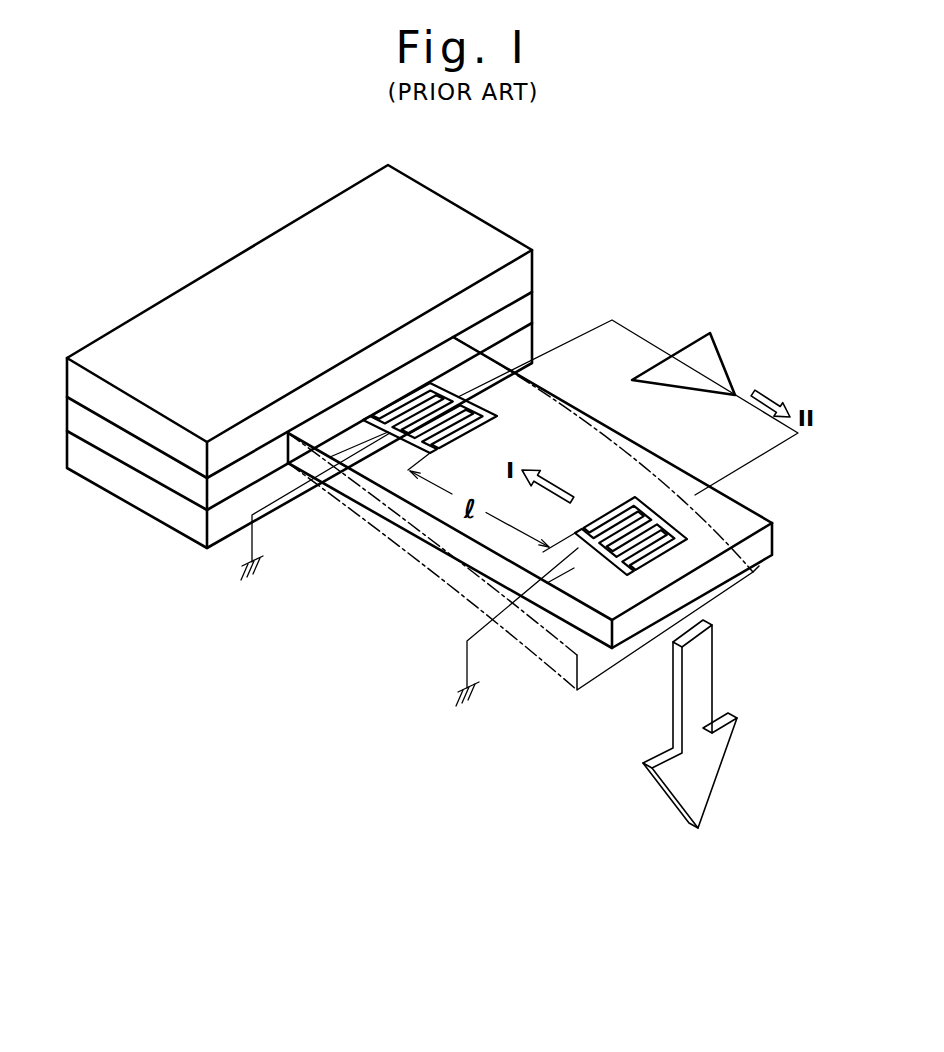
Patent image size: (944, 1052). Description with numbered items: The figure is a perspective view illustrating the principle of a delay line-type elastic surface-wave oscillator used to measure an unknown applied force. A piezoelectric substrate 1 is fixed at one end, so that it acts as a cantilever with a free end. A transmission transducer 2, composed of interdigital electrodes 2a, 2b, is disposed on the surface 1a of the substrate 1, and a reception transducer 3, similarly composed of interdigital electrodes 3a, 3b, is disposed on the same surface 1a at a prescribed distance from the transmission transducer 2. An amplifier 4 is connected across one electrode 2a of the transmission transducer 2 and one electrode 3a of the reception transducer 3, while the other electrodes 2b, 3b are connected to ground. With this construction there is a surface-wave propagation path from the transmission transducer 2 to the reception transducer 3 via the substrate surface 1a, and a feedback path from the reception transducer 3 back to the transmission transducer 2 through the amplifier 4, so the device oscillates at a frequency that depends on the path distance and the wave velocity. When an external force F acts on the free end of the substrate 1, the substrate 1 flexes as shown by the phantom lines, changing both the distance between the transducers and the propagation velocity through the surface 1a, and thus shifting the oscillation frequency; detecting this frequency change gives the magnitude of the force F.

The piezoelectric substrate 1 is at (418, 527).
The surface of the substrate 1a is at (590, 447).
The transmission transducer 2 is at (598, 581).
The interdigital electrode 2a is at (622, 497).
The interdigital electrode 2b is at (626, 578).
The reception transducer 3 is at (396, 463).
The interdigital electrode 3a is at (455, 385).
The interdigital electrode 3b is at (363, 421).
The amplifier 4 is at (728, 360).
The external force F is at (690, 742).